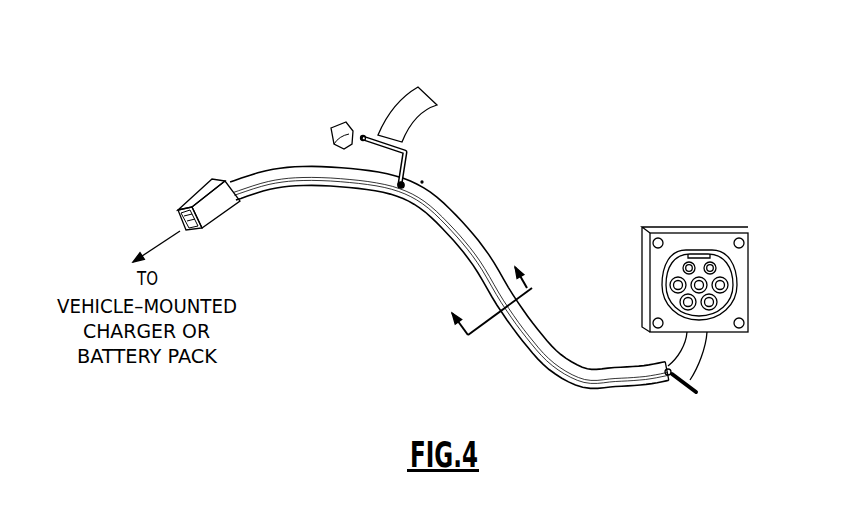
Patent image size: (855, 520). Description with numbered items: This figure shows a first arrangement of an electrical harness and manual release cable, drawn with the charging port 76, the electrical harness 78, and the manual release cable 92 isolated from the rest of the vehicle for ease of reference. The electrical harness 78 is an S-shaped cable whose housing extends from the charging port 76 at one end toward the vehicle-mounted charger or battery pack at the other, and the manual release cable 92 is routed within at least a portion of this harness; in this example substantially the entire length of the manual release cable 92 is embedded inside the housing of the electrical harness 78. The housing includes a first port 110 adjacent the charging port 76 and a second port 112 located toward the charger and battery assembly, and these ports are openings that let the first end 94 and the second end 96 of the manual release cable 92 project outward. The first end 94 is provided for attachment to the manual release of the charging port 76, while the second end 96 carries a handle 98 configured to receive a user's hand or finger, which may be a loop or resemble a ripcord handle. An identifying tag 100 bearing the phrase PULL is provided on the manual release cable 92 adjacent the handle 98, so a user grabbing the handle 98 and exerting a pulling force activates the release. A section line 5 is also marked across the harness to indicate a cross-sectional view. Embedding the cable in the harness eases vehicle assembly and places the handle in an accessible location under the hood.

The section line 5- 5 is at (500, 312).
The charging port 76 is at (768, 287).
The electrical harness 78 is at (380, 188).
The manual release cable 92 is at (405, 152).
The first end 94 is at (714, 382).
The second end 96 is at (367, 125).
The handle 98 is at (337, 124).
The identifying tag 100 is at (394, 113).
The first port 110 is at (666, 370).
The second port 112 is at (401, 186).